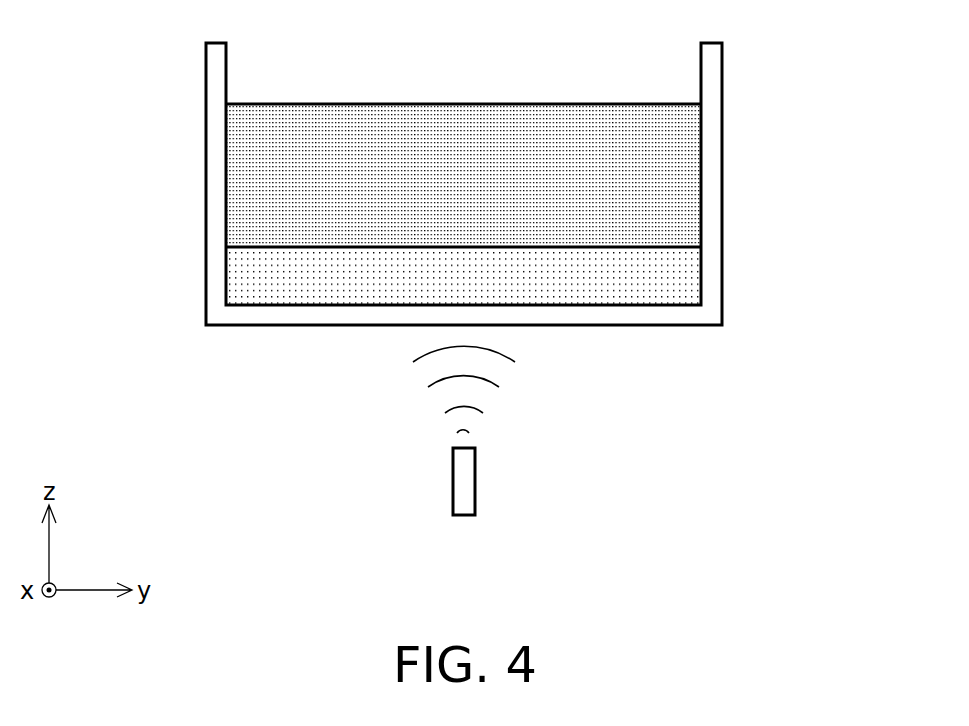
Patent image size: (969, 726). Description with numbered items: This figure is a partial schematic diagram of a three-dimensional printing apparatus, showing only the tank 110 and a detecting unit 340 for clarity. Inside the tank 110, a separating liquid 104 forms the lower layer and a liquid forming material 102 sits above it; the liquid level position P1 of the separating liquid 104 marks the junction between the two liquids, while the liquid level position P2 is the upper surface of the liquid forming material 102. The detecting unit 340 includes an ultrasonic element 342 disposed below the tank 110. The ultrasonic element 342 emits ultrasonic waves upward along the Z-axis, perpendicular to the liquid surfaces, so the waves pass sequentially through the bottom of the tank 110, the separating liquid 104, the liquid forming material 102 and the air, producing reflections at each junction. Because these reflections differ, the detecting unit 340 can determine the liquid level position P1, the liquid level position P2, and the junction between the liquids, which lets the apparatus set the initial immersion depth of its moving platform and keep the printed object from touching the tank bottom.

The tank 110 is at (715, 82).
The liquid forming material 102 is at (689, 148).
The separating liquid 104 is at (689, 273).
The detecting unit 340 is at (495, 464).
The ultrasonic element 342 is at (463, 505).
The liquid level position of the separating liquid P1 is at (218, 252).
The liquid level position of the liquid forming material P2 is at (218, 109).